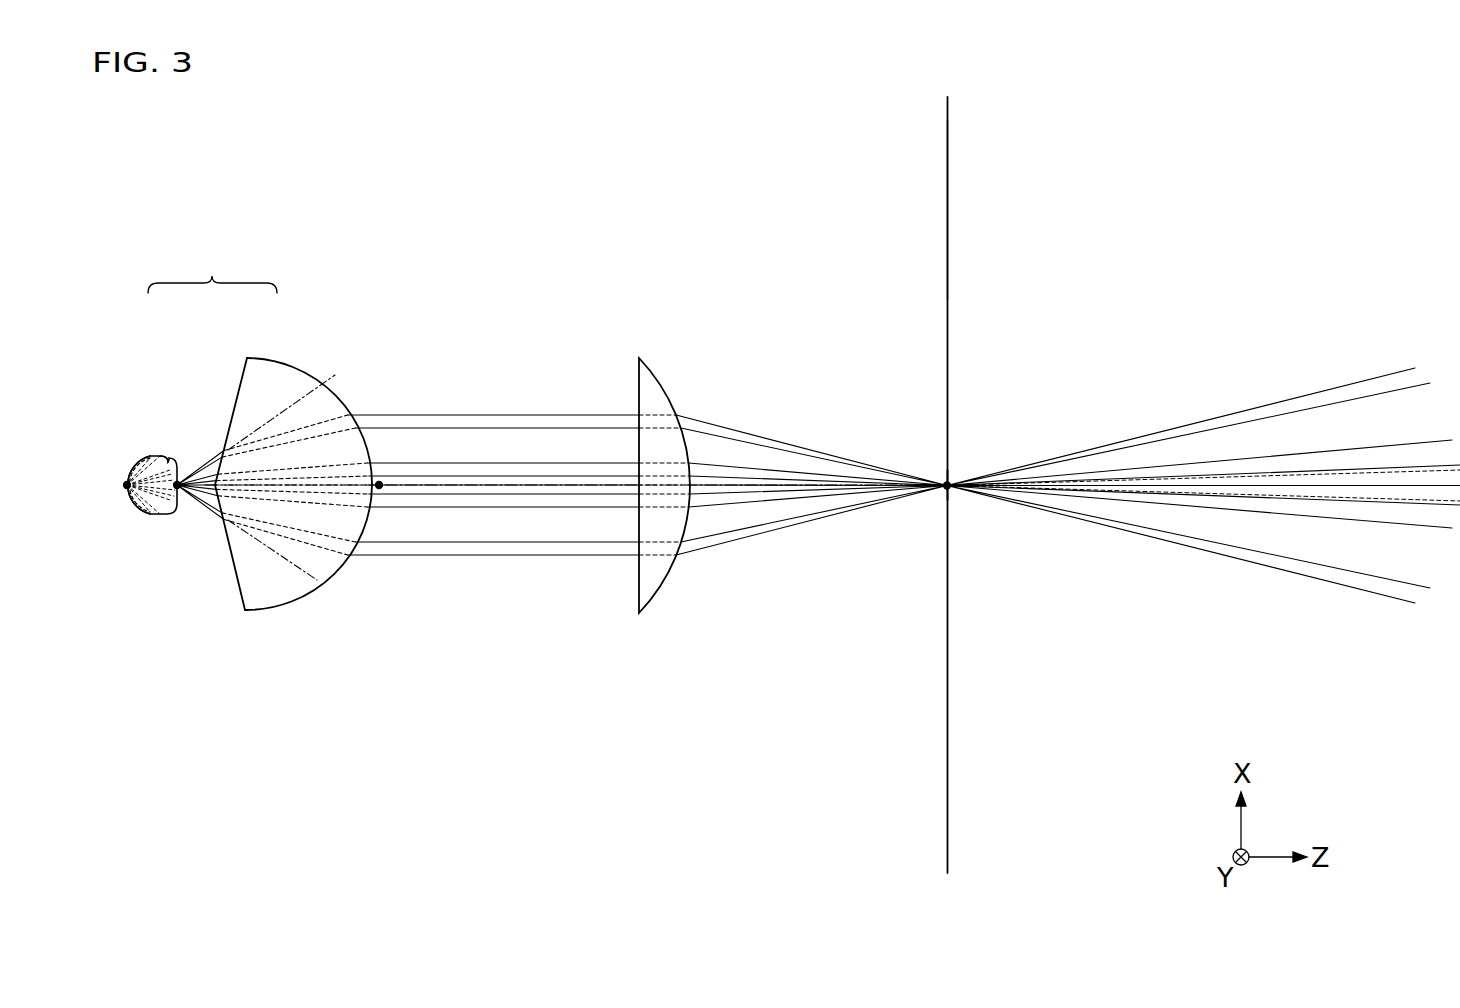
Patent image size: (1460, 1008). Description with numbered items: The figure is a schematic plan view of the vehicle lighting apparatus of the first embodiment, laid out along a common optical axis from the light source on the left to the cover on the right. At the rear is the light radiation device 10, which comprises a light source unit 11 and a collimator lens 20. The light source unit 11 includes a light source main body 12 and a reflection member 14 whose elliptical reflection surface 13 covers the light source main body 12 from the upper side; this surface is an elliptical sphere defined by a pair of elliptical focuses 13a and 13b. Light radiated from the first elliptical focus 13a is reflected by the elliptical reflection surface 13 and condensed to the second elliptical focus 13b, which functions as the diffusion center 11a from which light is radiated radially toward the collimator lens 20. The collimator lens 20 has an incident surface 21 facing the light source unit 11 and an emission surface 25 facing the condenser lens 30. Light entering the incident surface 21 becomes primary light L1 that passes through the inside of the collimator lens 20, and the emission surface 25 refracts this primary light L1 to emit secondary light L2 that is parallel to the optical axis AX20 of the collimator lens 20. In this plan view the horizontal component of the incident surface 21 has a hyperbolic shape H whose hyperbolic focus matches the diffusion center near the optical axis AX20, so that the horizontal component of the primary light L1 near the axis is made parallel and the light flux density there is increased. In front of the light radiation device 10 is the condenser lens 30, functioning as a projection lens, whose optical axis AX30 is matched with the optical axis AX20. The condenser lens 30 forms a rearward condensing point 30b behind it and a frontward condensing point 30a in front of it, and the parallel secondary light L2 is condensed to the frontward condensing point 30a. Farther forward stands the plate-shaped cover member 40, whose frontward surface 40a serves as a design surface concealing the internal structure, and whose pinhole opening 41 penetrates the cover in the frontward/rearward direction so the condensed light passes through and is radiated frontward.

The light radiation device 10 is at (212, 267).
The light source unit 11 is at (138, 455).
The diffusion center 11a is at (181, 500).
The light source main body 12 is at (125, 490).
The elliptical reflection surface 13 is at (165, 462).
The first elliptical focus 13a is at (123, 505).
The second elliptical focus 13b is at (216, 564).
The reflection member 14 is at (122, 468).
The collimator lens 20 is at (274, 472).
The incident surface 21 is at (233, 545).
The emission surface 25 is at (338, 562).
The hyperbolic shape H is at (320, 583).
The primary light L1 is at (322, 420).
The secondary light L2 is at (468, 414).
The optical axis of the collimator lens AX20 is at (410, 489).
The condenser lens 30 is at (650, 367).
The frontward condensing point 30a is at (943, 483).
The rearward condensing point 30b is at (379, 481).
The optical axis of the condenser lens AX30 is at (725, 489).
The cover member 40 is at (948, 97).
The frontward surface 40a is at (950, 135).
The opening 41 is at (955, 474).